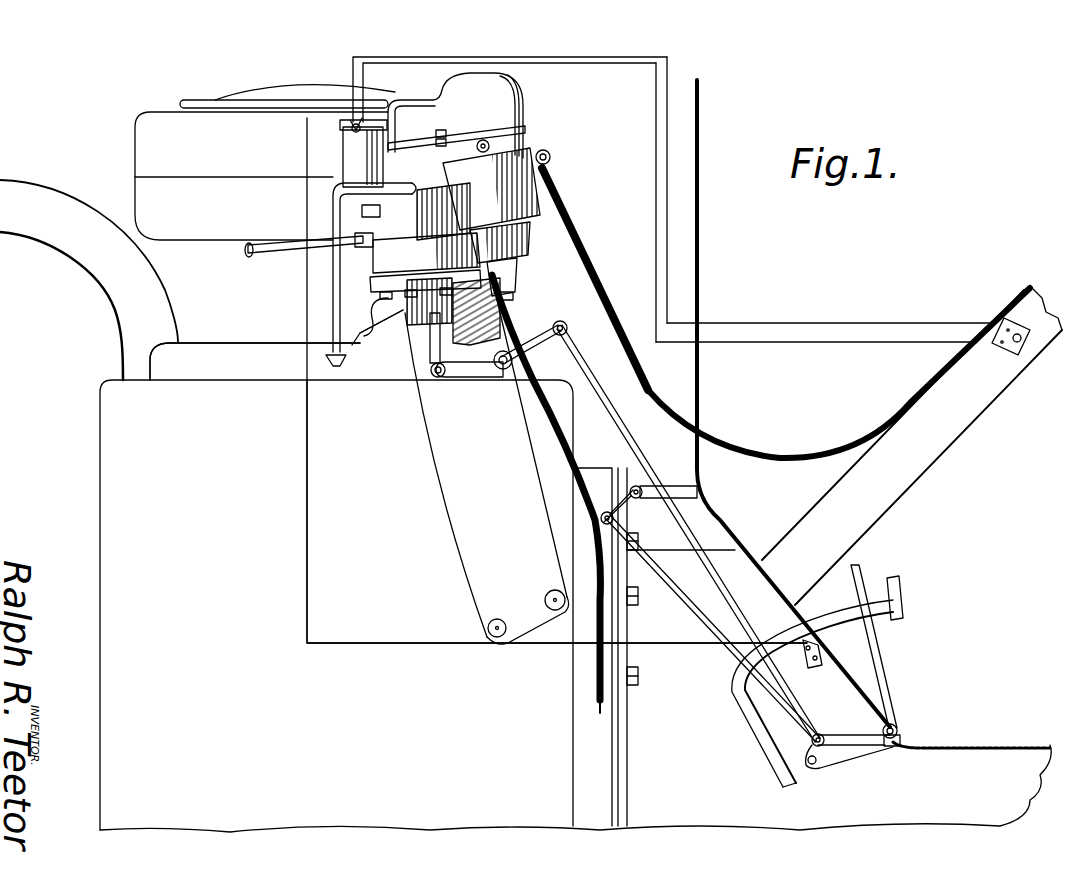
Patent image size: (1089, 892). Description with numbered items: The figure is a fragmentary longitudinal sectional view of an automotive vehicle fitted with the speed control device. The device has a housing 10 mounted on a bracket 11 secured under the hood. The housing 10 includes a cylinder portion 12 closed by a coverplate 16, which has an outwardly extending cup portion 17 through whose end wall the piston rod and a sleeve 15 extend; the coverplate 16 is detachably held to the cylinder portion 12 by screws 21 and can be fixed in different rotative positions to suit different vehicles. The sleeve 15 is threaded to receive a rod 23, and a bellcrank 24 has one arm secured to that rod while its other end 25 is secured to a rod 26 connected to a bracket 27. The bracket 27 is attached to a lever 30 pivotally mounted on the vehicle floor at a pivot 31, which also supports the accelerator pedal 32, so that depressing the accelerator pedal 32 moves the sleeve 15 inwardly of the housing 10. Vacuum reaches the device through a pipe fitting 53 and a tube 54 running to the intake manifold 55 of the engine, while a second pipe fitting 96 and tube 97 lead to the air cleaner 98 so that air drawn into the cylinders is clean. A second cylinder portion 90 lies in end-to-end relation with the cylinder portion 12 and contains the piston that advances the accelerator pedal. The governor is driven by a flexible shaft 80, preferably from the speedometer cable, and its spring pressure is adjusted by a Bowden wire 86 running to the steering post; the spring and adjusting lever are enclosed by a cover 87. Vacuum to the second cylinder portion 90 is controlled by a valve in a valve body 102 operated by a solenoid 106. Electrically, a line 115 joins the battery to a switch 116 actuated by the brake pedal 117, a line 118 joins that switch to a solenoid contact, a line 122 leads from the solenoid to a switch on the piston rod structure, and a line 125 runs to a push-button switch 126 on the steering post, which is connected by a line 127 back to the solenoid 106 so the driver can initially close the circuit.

The housing 10 is at (560, 186).
The bracket 11 is at (462, 536).
The cylinder portion 12 is at (425, 258).
The sleeve 15 is at (428, 358).
The coverplate 16 is at (355, 340).
The cup portion 17 is at (403, 328).
The screws 21 is at (425, 340).
The rod 23 is at (458, 372).
The bellcrank 24 is at (482, 368).
The other end of the bellcrank 25 is at (538, 340).
The rod 26 is at (630, 448).
The bracket 27 is at (838, 756).
The lever 30 is at (892, 746).
The pivot 31 is at (897, 730).
The accelerator pedal 32 is at (882, 665).
The pipe fitting 53 is at (428, 198).
The tube 54 is at (327, 318).
The intake manifold 55 is at (207, 352).
The flexible shaft 80 is at (597, 680).
The Bowden wire 86 is at (800, 455).
The cover 87 is at (528, 114).
The second cylinder portion 90 is at (491, 224).
The pipe fitting 96 is at (355, 240).
The tube 97 is at (250, 246).
The air cleaner 98 is at (152, 127).
The valve body 102 is at (410, 194).
The solenoid 106 is at (343, 152).
The line 115 is at (798, 692).
The switch 116 is at (813, 660).
The brake pedal 117 is at (900, 592).
The line 118 is at (348, 648).
The line 122 is at (385, 305).
The line 125 is at (667, 160).
The push-button switch 126 is at (1030, 345).
The line 127 is at (656, 228).